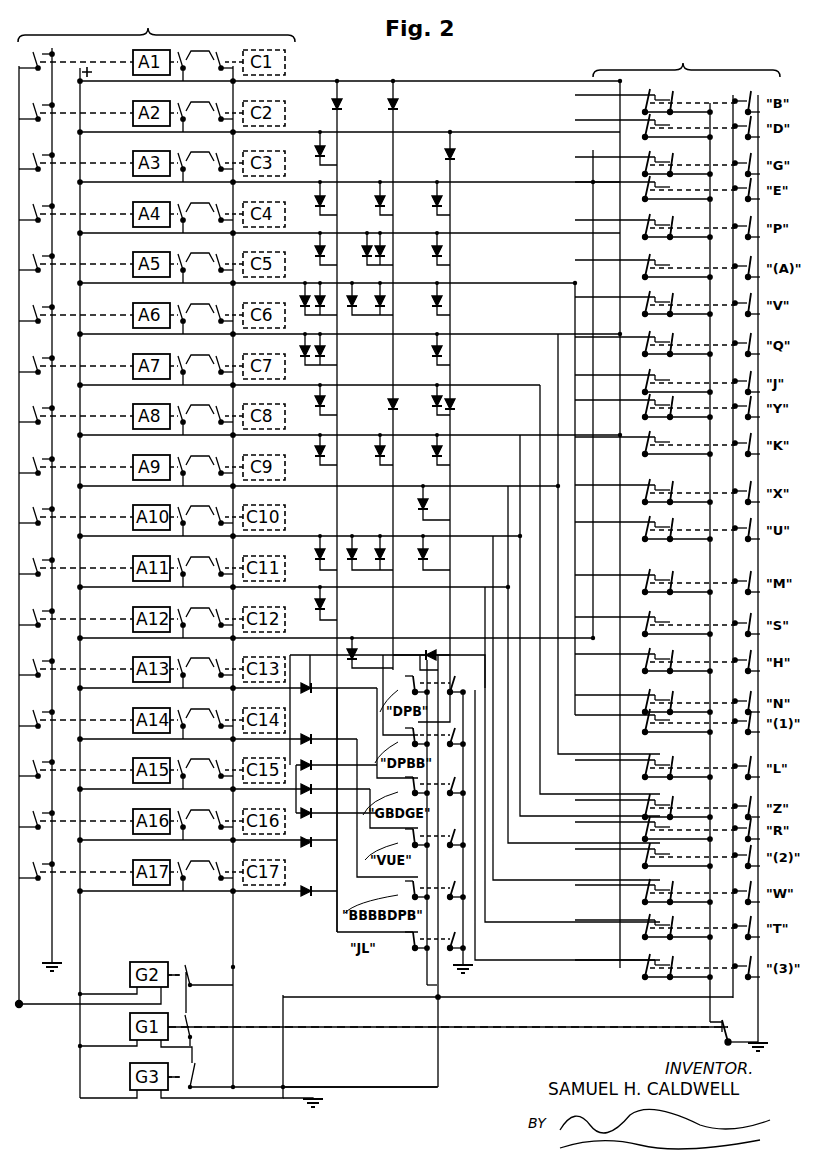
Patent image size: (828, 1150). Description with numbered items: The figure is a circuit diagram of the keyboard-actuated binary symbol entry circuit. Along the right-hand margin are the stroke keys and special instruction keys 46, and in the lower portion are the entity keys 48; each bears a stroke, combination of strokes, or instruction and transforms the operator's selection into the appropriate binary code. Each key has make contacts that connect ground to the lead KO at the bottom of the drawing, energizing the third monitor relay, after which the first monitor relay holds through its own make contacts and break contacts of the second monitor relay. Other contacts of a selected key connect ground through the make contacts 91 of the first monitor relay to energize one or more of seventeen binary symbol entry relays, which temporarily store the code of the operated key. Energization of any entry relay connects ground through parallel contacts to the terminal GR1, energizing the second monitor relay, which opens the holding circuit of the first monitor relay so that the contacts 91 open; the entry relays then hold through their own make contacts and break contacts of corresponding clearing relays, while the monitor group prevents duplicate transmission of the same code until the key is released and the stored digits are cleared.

The stroke keys and special instruction keys 46 is at (775, 60).
The entity keys 48 is at (335, 950).
The make contacts of relay G1 91 is at (735, 1020).
The lead K0 KO is at (372, 1000).
The terminal GR1 is at (44, 1017).